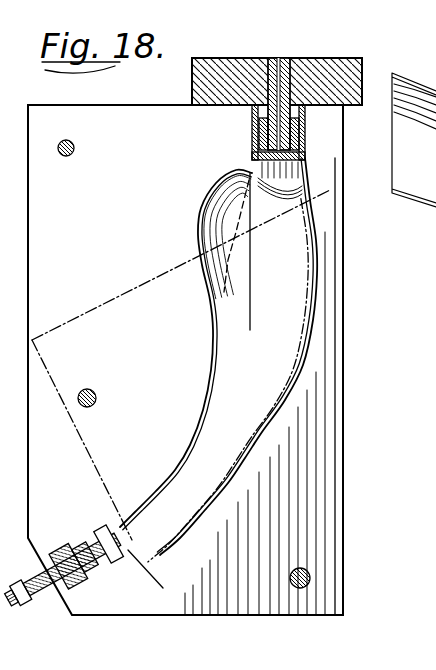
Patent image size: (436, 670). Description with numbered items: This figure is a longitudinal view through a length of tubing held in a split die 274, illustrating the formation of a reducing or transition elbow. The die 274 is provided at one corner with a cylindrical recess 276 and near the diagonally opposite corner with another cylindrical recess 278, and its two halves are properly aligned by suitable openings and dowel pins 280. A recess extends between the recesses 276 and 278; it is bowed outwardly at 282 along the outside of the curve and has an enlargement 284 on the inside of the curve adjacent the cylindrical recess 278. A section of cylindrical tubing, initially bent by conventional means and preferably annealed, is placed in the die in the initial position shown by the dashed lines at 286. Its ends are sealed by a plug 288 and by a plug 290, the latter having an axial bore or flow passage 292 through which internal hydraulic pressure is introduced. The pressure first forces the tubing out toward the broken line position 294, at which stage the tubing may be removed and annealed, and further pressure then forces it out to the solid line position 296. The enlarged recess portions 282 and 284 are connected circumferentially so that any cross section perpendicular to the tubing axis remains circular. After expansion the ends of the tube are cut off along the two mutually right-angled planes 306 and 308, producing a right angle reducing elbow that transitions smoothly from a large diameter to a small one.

The split die 274 is at (327, 403).
The cylindrical recess 276 is at (122, 573).
The cylindrical recess 278 is at (250, 118).
The dowel pins 280 is at (75, 152).
The outwardly bowed recess portion 282 is at (313, 332).
The enlargement 284 is at (205, 206).
The initial position of tubing 286 is at (292, 303).
The plug 288 is at (100, 532).
The plug 290 is at (331, 61).
The axial bore 292 is at (278, 57).
The broken line position 294 is at (212, 226).
The solid line position 296 is at (322, 270).
The cutting plane 306 is at (98, 460).
The cutting plane 308 is at (172, 266).